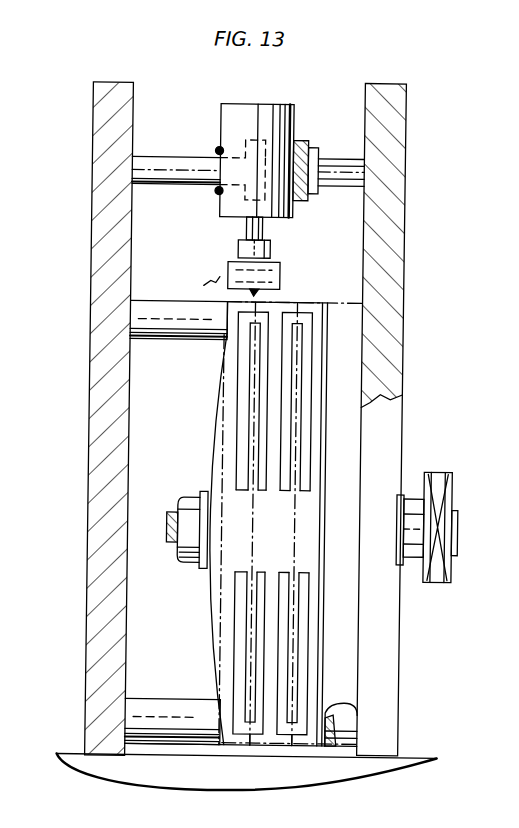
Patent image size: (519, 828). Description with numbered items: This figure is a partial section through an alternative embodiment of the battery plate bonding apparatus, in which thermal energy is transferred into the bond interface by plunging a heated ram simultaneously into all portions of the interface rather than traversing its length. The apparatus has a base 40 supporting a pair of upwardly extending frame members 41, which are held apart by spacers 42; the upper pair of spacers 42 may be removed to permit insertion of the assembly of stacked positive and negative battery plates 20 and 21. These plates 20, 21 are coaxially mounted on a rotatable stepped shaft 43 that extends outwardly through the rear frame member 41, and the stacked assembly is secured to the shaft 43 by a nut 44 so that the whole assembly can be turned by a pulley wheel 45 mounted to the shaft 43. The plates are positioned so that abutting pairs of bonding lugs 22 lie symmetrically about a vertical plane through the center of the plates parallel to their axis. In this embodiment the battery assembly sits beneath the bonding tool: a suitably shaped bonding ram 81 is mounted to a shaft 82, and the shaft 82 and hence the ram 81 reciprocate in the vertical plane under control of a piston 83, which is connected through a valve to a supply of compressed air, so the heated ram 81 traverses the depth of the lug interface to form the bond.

The positive battery plate 20 is at (272, 408).
The negative battery plate 21 is at (295, 661).
The bonding lug 22 is at (288, 312).
The base 40 is at (412, 757).
The frame member 41 is at (101, 554).
The spacer 42 is at (143, 302).
The rotatable stepped shaft 43 is at (459, 534).
The nut 44 is at (191, 500).
The pulley wheel 45 is at (449, 476).
The bonding ram 81 is at (226, 272).
The shaft 82 is at (245, 229).
The piston 83 is at (233, 121).